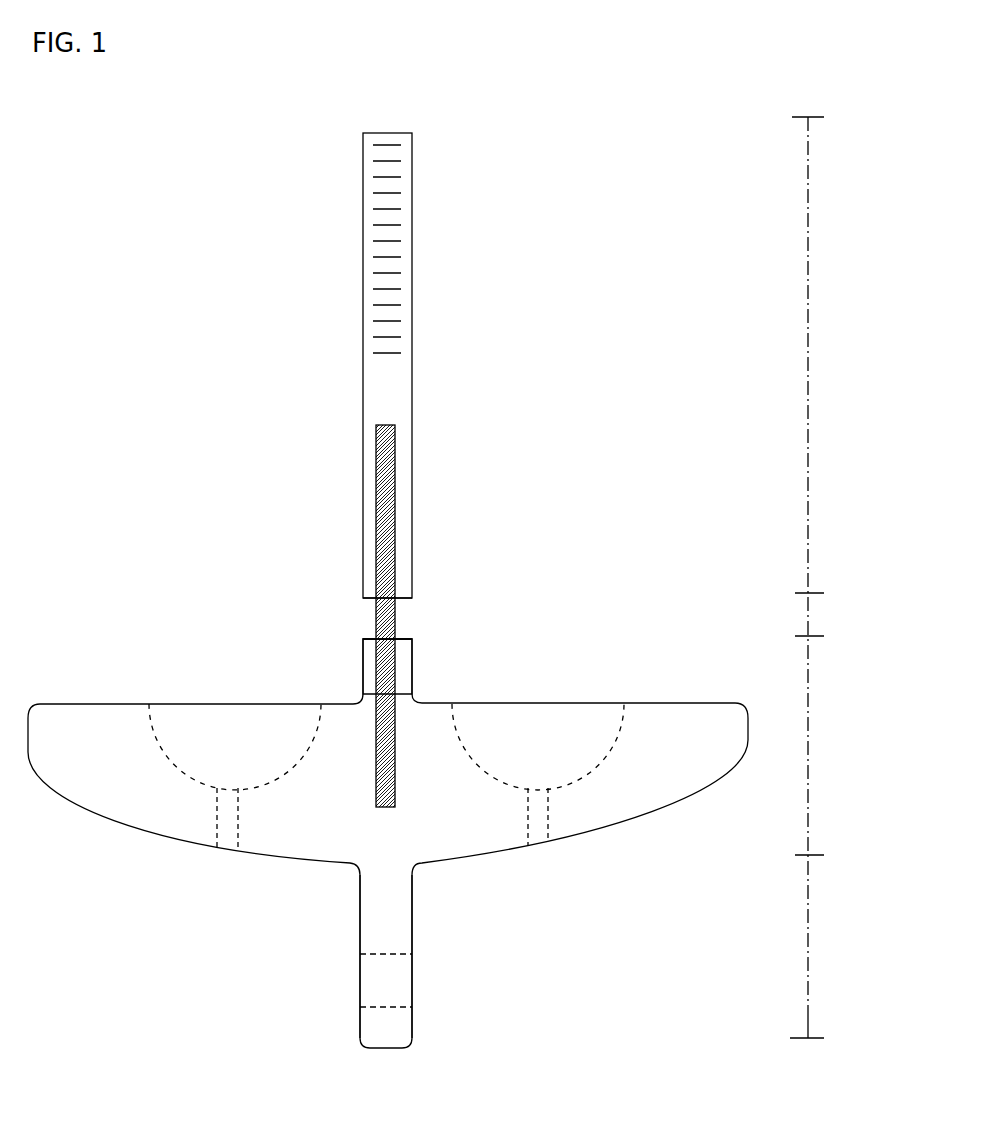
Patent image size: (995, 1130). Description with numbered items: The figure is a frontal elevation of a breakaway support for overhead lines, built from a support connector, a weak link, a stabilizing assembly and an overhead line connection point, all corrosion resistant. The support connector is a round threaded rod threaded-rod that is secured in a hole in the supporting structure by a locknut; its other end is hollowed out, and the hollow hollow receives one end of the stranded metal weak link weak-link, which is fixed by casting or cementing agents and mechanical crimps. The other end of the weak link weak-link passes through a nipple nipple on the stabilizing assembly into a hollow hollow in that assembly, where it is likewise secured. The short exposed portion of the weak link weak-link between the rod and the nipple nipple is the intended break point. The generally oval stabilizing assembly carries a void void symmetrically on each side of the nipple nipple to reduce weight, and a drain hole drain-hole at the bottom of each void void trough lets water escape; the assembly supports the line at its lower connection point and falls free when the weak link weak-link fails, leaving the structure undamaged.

The threaded rod threaded-rod is at (412, 278).
The element hollow is at (395, 472).
The weak link weak-link is at (800, 612).
The element nipple is at (362, 665).
The voided area void is at (217, 730).
The drain hole drain-hole is at (537, 832).